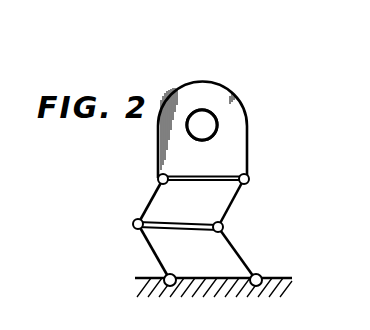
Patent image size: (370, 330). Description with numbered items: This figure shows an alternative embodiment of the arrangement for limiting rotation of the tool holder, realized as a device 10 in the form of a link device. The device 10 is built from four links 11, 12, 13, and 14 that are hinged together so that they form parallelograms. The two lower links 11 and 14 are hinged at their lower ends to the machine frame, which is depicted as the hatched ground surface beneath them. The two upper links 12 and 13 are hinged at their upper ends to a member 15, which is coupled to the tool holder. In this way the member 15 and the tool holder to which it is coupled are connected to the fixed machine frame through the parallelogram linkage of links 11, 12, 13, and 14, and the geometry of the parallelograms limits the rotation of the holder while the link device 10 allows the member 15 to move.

The device 10 is at (247, 104).
The link 11 is at (153, 254).
The link 12 is at (150, 198).
The link 13 is at (233, 198).
The link 14 is at (237, 252).
The member 15 is at (198, 92).